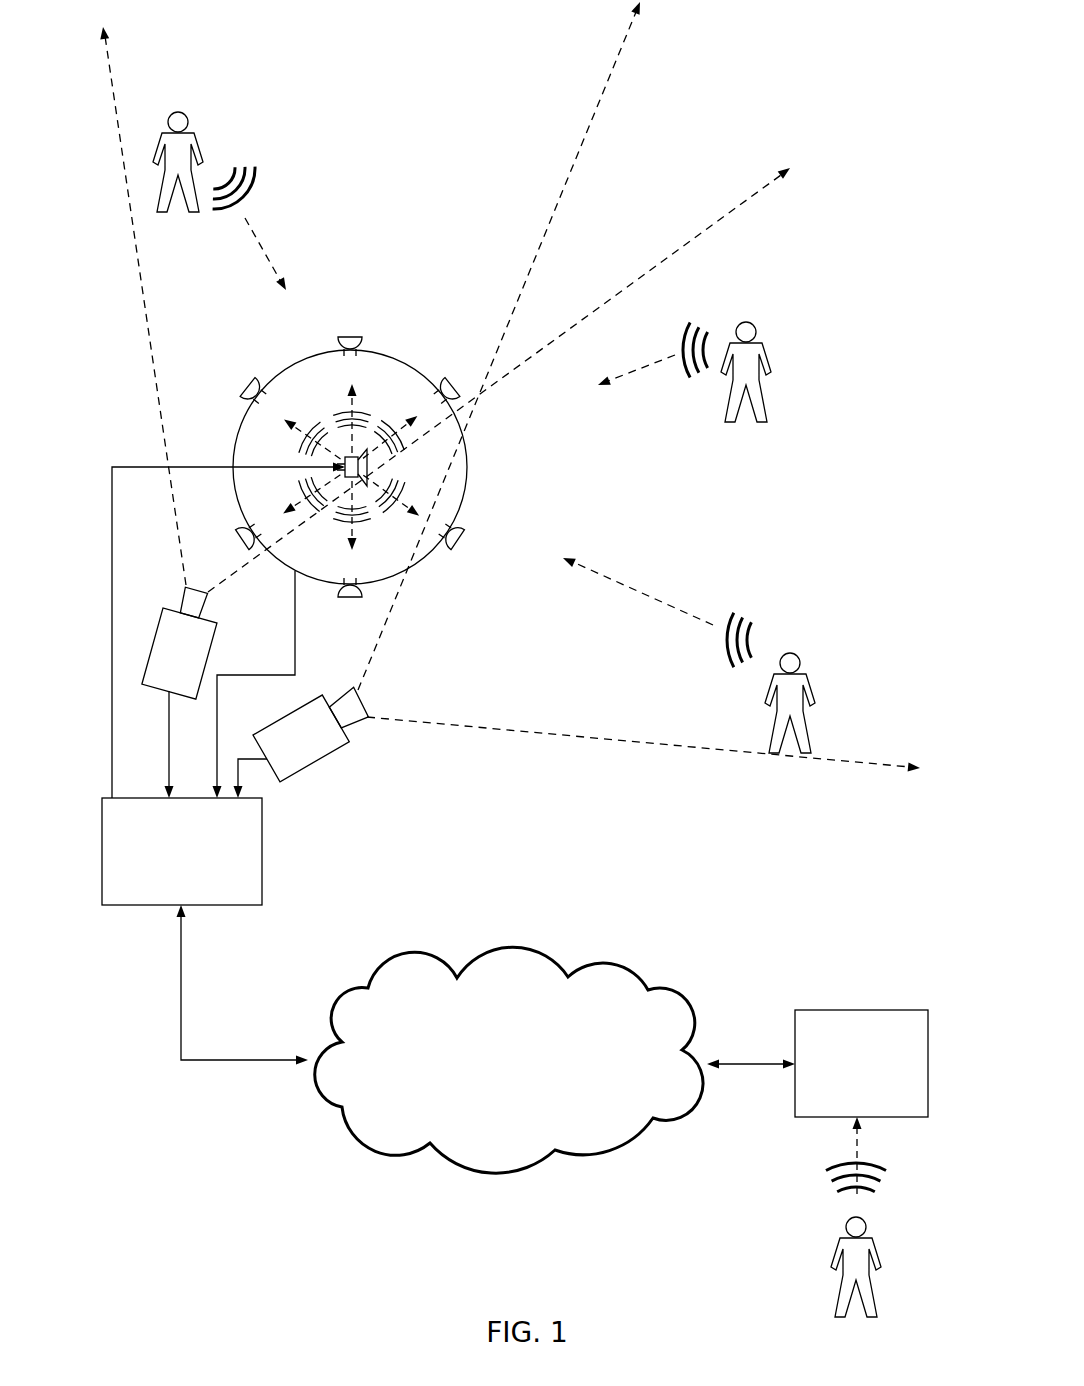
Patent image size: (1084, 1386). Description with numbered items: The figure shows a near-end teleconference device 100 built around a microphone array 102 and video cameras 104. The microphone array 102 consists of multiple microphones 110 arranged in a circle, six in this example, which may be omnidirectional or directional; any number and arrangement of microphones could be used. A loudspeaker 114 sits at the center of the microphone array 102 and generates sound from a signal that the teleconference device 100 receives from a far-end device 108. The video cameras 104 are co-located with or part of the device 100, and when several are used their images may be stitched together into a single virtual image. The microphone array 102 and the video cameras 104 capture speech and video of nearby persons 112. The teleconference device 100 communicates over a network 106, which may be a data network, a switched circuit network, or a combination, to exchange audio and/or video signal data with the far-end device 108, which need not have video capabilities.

The near-end teleconference device 100 is at (160, 866).
The microphone array 102 is at (400, 357).
The video cameras 104 is at (160, 667).
The network 106 is at (483, 1073).
The far-end device 108 is at (840, 1077).
The microphones 110 is at (349, 337).
The persons 112 is at (196, 104).
The loudspeaker 114 is at (367, 468).